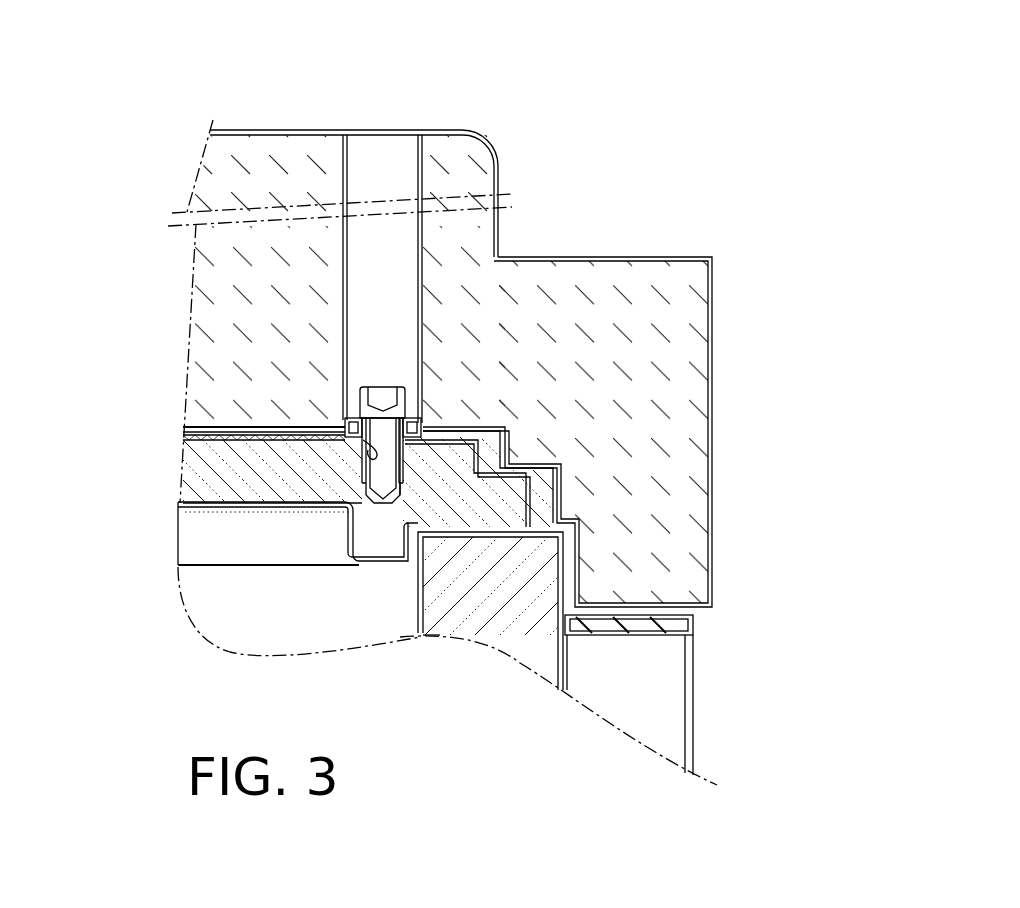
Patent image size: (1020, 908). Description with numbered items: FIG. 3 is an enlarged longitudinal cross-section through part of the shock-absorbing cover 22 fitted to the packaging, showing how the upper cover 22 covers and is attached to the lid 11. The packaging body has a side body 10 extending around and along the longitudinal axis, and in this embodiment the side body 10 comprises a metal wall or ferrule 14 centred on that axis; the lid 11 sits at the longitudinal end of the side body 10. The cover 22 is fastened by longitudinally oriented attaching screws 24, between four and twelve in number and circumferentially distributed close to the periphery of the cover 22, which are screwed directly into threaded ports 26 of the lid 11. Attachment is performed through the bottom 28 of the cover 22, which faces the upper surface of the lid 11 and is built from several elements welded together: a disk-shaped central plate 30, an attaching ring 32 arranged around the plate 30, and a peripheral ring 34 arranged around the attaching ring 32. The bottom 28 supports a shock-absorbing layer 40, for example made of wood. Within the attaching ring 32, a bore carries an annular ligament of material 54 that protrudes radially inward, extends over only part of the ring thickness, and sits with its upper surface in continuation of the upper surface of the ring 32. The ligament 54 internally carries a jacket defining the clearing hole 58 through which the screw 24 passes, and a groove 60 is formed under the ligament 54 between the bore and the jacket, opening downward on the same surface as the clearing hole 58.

The side body 10 is at (698, 718).
The lid 11 is at (228, 483).
The metal wall/ferrule 14 is at (490, 618).
The shock-absorbing cover 22 is at (627, 125).
The attaching screw 24 is at (357, 398).
The threaded port 26 is at (400, 463).
The bottom 28 is at (182, 427).
The central plate 30 is at (182, 428).
The attaching ring 32 is at (340, 421).
The peripheral ring 34 is at (487, 427).
The shock-absorbing layer 40 is at (220, 163).
The annular ligament of material 54 is at (413, 420).
The clearing hole 58 is at (378, 437).
The groove 60 is at (413, 433).